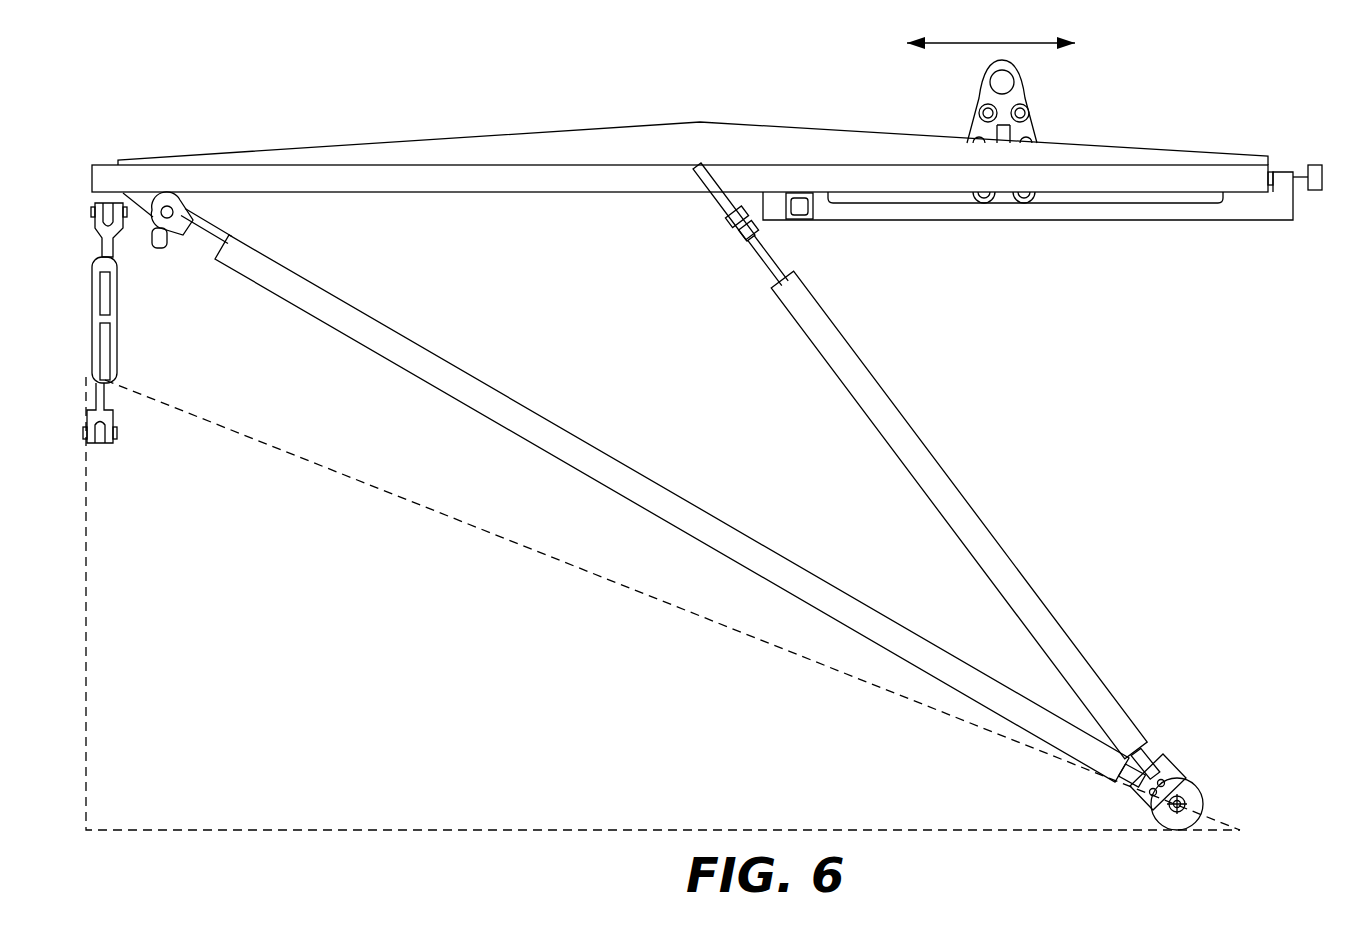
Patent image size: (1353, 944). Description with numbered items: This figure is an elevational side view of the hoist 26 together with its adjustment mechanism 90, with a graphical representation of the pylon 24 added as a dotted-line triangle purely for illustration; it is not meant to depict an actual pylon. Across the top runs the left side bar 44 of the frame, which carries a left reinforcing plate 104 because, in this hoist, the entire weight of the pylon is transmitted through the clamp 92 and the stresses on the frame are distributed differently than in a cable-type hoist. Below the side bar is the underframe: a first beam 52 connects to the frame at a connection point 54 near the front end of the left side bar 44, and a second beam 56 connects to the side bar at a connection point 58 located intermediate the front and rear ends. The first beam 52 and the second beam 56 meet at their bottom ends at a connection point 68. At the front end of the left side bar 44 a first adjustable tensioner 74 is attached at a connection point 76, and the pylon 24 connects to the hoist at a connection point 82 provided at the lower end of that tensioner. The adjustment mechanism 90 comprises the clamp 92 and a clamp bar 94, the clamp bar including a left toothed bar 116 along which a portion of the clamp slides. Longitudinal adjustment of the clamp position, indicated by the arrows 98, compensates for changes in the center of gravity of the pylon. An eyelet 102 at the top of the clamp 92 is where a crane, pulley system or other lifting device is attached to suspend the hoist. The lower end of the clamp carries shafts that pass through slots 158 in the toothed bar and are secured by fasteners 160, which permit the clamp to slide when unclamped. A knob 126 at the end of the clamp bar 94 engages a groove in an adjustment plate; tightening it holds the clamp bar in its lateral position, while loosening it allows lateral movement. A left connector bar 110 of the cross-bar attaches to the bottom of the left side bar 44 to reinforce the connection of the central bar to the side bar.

The pylon 24 is at (607, 758).
The hoist 26 is at (508, 508).
The left side bar 44 is at (493, 187).
The first beam 52 is at (672, 493).
The connection point 54 is at (190, 208).
The second beam 56 is at (1013, 555).
The connection point 58 is at (733, 232).
The connection point 68 is at (1182, 800).
The first adjustable tensioner 74 is at (117, 320).
The connection point 76 is at (117, 240).
The connection point 82 is at (110, 443).
The adjustment mechanism 90 is at (693, 82).
The clamp 92 is at (998, 101).
The clamp bar 94 is at (1028, 244).
The arrows 98 is at (952, 42).
The eyelet 102 is at (1015, 77).
The left reinforcing plate 104 is at (598, 140).
The left connector bar 110 is at (805, 220).
The left toothed bar 116 is at (912, 220).
The knob 126 is at (1313, 165).
The slots 158 is at (1170, 204).
The fasteners 160 is at (990, 204).